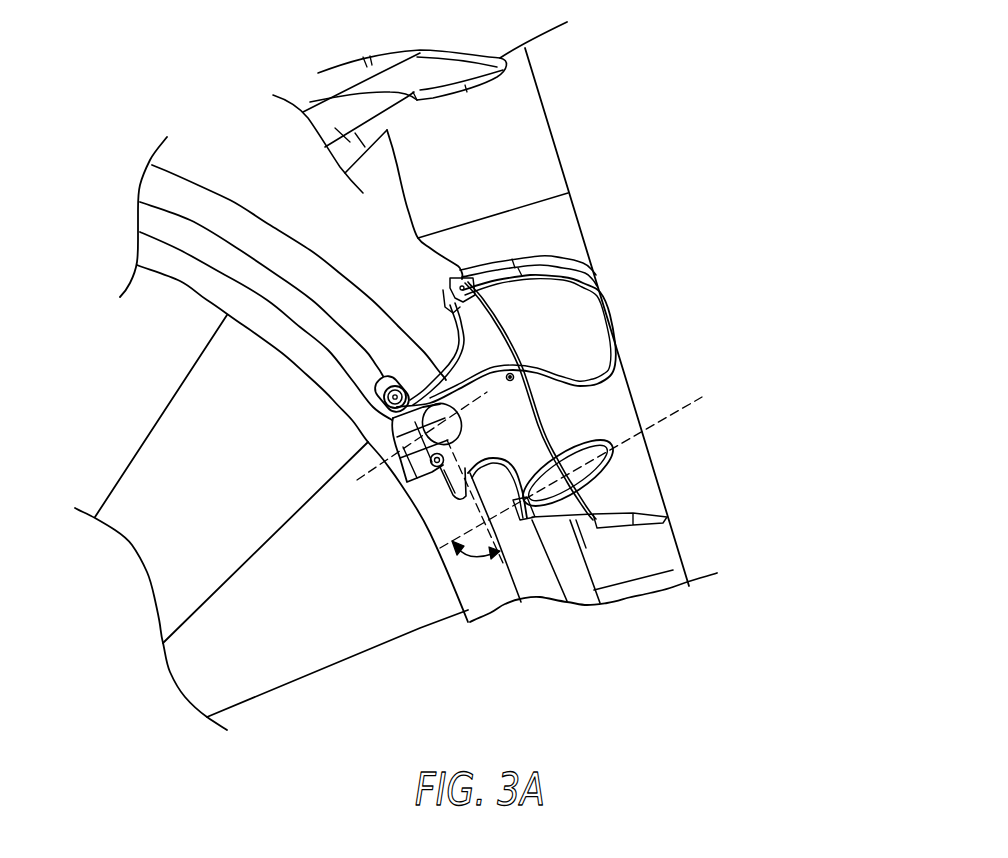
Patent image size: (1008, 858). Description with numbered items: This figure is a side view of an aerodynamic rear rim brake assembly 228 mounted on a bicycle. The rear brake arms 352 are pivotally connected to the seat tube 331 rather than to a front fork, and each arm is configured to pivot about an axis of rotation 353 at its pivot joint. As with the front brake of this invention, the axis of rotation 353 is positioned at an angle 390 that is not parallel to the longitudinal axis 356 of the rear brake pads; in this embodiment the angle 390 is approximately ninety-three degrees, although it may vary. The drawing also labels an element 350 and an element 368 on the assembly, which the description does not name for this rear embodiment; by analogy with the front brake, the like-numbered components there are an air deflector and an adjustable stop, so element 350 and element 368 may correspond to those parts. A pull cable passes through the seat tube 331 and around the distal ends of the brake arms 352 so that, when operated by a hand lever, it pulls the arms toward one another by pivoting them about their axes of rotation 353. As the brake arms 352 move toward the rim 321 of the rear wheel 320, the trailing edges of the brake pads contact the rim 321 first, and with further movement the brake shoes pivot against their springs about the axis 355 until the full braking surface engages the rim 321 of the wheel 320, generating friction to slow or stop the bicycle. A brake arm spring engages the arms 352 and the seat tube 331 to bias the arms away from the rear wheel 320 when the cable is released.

The rear rim brake assembly 228 is at (728, 318).
The rear wheel 320 is at (155, 248).
The rim 321 is at (160, 225).
The seat tube 331 is at (518, 158).
The front derailleur 350 is at (587, 408).
The rear brake arms 352 is at (522, 441).
The axis of rotation 353 is at (680, 409).
The axis 355 is at (383, 468).
The longitudinal axis of the rear brake pads 356 is at (375, 360).
The pivot pin 368 is at (512, 372).
The angle 390 is at (467, 560).